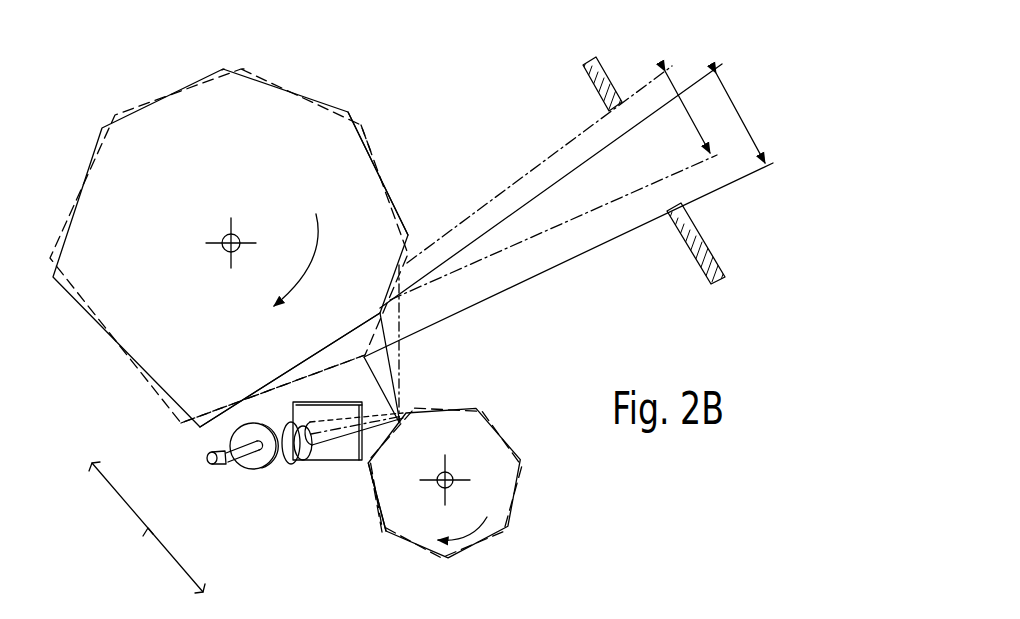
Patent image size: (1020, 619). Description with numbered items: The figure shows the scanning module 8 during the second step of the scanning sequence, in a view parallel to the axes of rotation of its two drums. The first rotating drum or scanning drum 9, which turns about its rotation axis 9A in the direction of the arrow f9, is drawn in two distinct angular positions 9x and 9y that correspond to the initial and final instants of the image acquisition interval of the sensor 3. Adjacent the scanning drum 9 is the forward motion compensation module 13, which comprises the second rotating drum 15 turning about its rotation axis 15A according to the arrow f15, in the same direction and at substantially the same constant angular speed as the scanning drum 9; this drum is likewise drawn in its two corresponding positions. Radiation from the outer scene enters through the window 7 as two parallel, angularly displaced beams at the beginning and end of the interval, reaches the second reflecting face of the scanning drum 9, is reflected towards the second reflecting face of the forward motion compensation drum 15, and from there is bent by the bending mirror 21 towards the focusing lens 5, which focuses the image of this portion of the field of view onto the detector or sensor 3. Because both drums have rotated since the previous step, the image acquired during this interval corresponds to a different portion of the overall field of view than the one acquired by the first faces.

The first rotating drum 9 is at (160, 72).
The angular position of scanning drum 9x is at (213, 70).
The angular position of scanning drum 9y is at (258, 70).
The rotation axis 9A is at (238, 238).
The arrow f9 is at (302, 263).
The window 7 is at (708, 258).
The detector or sensor 3 is at (212, 470).
The focusing lens 5 is at (262, 470).
The bending mirror 21 is at (332, 456).
The scanning module 8 is at (147, 532).
The second rotating drum 15 is at (528, 514).
The forward motion compensation module 13 is at (560, 480).
The rotation axis 15A is at (452, 473).
The arrow f15 is at (484, 518).